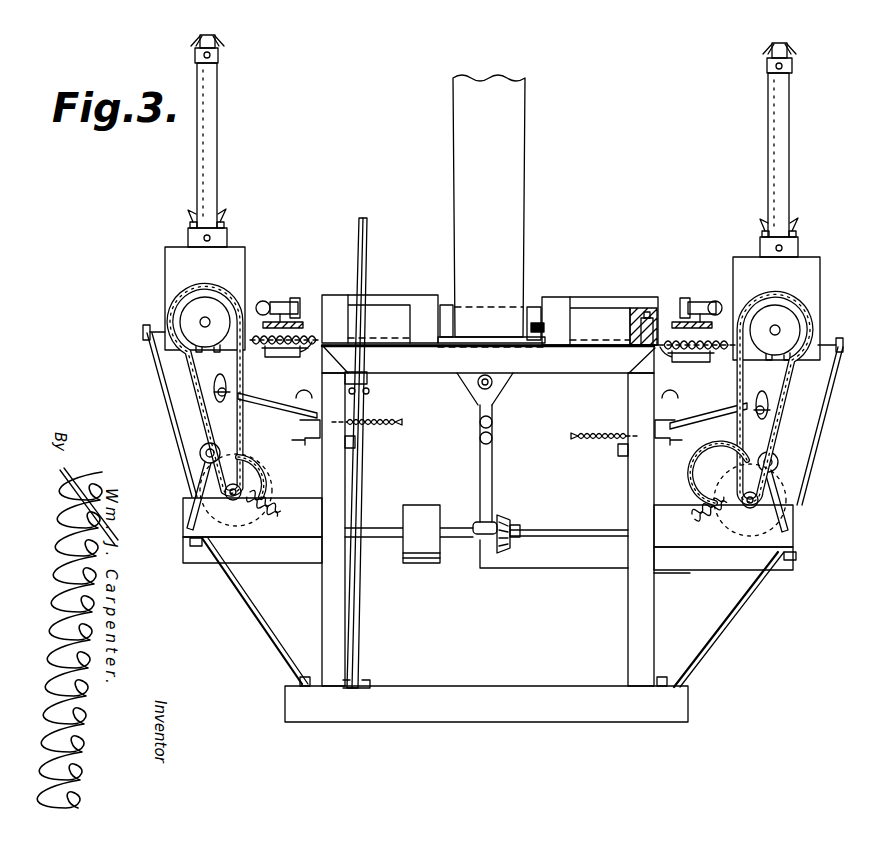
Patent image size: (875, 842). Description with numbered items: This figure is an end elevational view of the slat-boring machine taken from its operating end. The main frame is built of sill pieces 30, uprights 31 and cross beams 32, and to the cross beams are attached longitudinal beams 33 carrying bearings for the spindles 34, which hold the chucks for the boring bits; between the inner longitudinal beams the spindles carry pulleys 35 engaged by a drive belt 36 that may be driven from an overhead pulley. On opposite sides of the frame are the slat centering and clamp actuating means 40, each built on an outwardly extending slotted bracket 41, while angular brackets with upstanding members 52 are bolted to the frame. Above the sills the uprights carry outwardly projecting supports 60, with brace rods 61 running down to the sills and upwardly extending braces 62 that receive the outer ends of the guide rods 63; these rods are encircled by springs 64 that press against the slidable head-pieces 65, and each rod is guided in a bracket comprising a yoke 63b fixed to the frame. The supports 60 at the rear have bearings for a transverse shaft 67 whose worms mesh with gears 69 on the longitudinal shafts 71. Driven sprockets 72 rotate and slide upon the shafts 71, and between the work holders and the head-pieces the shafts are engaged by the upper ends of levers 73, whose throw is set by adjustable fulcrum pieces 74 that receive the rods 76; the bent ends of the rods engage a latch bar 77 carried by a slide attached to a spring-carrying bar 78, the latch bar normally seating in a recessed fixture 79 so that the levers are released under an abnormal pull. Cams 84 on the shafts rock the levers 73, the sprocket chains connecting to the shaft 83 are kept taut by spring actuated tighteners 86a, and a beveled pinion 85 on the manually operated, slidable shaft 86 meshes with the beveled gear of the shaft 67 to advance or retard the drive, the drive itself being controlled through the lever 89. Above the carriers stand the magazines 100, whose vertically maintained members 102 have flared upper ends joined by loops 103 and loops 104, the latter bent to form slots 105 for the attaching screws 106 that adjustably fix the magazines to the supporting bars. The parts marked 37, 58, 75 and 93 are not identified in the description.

The sill pieces 30 is at (486, 699).
The uprights 31 is at (350, 592).
The cross beams 32 is at (558, 377).
The longitudinal beams 33 is at (325, 306).
The spindles 34 is at (543, 322).
The pulleys 35 is at (528, 305).
The drive belt 36 is at (520, 148).
The right standard 37 is at (630, 590).
The slat centering and clamp actuating means 40 is at (279, 297).
The bracket 41 is at (290, 360).
The upstanding members 52 is at (865, 497).
The frame member 58 is at (869, 148).
The supports 60 is at (700, 540).
The brace rods 61 is at (248, 602).
The braces 62 is at (165, 413).
The rods 63 is at (146, 340).
The yoke 63b is at (640, 345).
The springs 64 is at (250, 335).
The head-pieces 65 is at (205, 298).
The transverse shaft 67 is at (550, 530).
The gears 69 is at (256, 478).
The longitudinal shafts 71 is at (200, 320).
The driven sprockets 72 is at (190, 322).
The levers 73 is at (232, 420).
The fulcrum pieces 74 is at (230, 392).
The pawl 75 is at (762, 400).
The rod 76 is at (282, 406).
The latch bar 77 is at (303, 434).
The bar 78 is at (393, 423).
The fixture 79 is at (356, 446).
The shaft 83 is at (234, 500).
The cams 84 is at (252, 484).
The beveled pinion 85 is at (472, 545).
The manually operated shaft 86 is at (490, 468).
The tightener 86a is at (810, 509).
The lever 89 is at (367, 258).
The spring hooks 93 is at (222, 217).
The magazines 100 is at (217, 146).
The members 102 is at (207, 189).
The loops 103 is at (218, 57).
The loops 104 is at (190, 237).
The slots 105 is at (767, 67).
The attaching means 106 is at (225, 231).